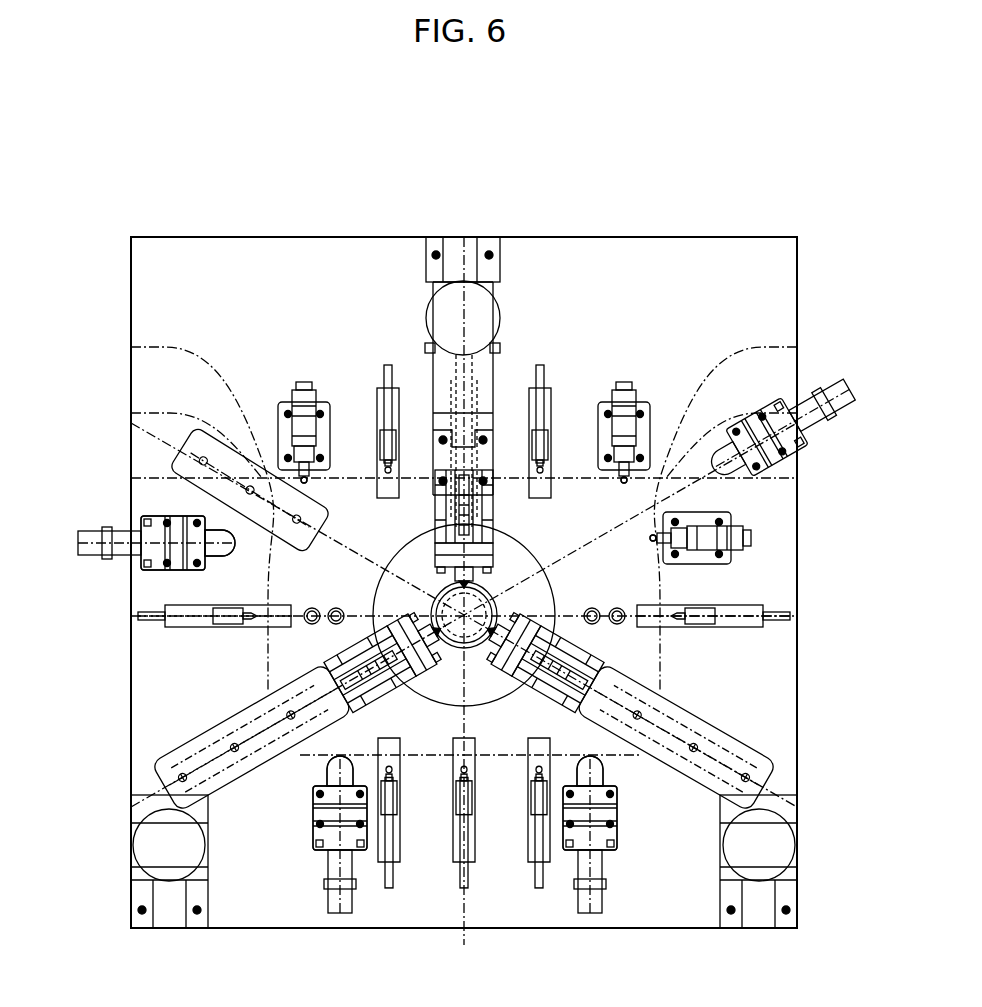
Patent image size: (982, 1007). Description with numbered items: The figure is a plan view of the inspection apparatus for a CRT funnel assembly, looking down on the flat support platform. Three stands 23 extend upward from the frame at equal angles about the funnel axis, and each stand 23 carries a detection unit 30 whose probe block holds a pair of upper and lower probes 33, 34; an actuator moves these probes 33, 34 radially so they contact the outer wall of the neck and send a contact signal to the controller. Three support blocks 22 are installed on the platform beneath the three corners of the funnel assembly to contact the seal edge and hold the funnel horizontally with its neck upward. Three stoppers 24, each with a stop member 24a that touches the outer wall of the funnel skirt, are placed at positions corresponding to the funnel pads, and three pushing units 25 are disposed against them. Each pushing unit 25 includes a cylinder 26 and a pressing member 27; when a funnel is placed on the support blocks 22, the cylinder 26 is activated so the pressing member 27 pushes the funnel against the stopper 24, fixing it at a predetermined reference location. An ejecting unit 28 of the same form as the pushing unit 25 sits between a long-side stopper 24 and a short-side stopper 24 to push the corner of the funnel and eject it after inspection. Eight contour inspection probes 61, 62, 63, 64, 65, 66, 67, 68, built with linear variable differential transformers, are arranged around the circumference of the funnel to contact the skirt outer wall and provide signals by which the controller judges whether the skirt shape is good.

The support block 22 is at (215, 440).
The stand 23 is at (490, 370).
The stopper 24 is at (296, 400).
The stop member 24a is at (300, 468).
The pushing unit 25 is at (98, 563).
The cylinder 26 is at (147, 520).
The pressing member 27 is at (222, 528).
The ejecting unit 28 is at (845, 447).
The detection unit 30 is at (522, 700).
The upper probe 33 is at (478, 600).
The lower probe 34 is at (490, 600).
The contour inspection probe 61 is at (450, 373).
The contour inspection probe 62 is at (545, 365).
The contour inspection probe 63 is at (770, 622).
The contour inspection probe 64 is at (540, 888).
The contour inspection probe 65 is at (466, 888).
The contour inspection probe 66 is at (392, 888).
The contour inspection probe 67 is at (150, 620).
The contour inspection probe 68 is at (385, 368).